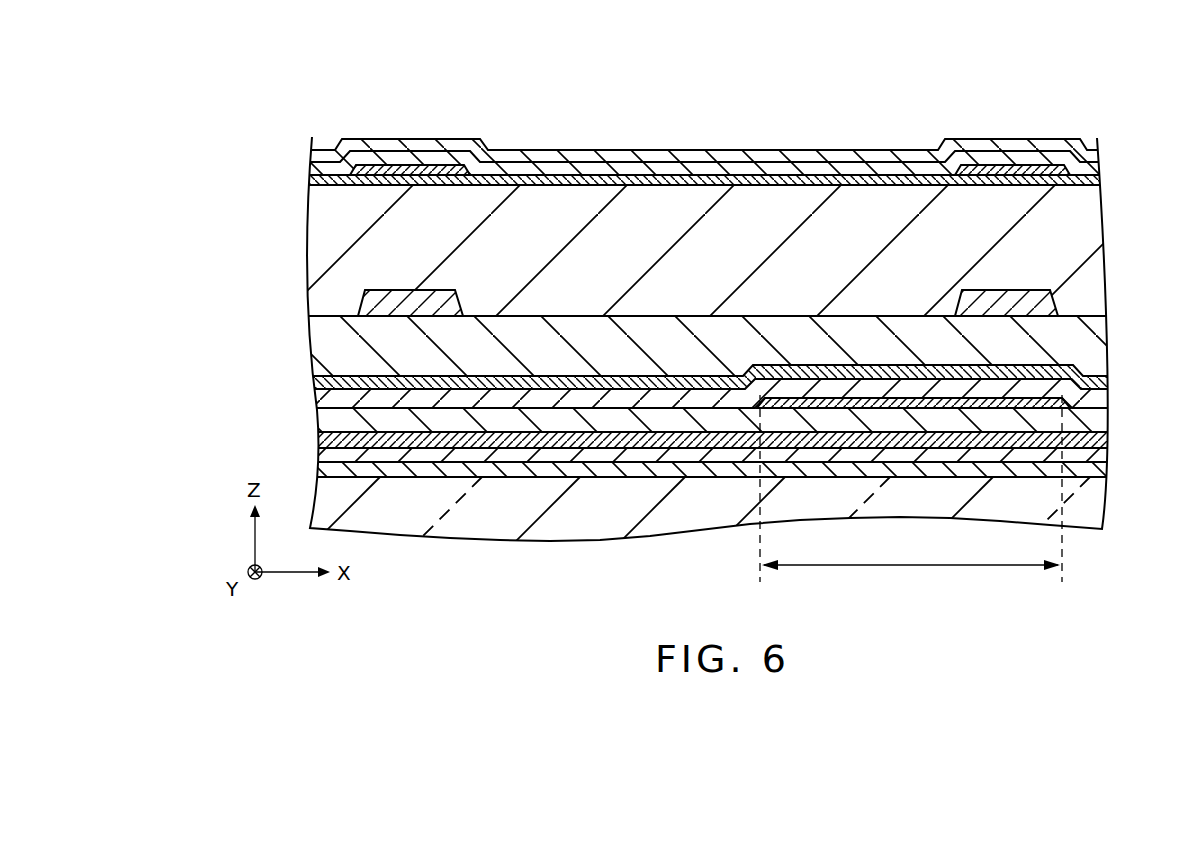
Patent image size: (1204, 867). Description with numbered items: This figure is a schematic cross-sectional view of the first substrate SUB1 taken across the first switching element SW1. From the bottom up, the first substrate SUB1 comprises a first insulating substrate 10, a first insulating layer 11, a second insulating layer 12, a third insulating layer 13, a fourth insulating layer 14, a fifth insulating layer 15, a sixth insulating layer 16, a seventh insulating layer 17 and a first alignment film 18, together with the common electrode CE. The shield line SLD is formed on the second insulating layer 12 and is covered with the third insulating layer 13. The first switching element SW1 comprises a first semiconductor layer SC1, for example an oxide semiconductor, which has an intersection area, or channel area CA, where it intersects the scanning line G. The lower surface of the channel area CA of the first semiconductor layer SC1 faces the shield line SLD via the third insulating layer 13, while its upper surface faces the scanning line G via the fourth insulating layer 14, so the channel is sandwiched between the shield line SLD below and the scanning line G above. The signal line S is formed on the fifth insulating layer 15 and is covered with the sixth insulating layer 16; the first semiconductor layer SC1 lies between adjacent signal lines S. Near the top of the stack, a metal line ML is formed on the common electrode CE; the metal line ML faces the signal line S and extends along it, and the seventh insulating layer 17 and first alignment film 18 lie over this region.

The first substrate SUB1 is at (291, 122).
The metal line ML is at (431, 168).
The first alignment film 18 is at (1062, 140).
The seventh insulating layer 17 is at (1100, 171).
The sixth insulating layer 16 is at (1072, 232).
The common electrode CE is at (848, 184).
The signal line S is at (410, 298).
The first semiconductor layer SC1 is at (890, 402).
The scanning line G is at (605, 386).
The fifth insulating layer 15 is at (1095, 346).
The fourth insulating layer 14 is at (1107, 388).
The third insulating layer 13 is at (1107, 404).
The second insulating layer 12 is at (1107, 441).
The first insulating layer 11 is at (1107, 462).
The first insulating substrate 10 is at (1107, 498).
The shield line SLD is at (648, 440).
The first switching element SW1 is at (900, 418).
The intersection area (channel area) CA is at (911, 495).